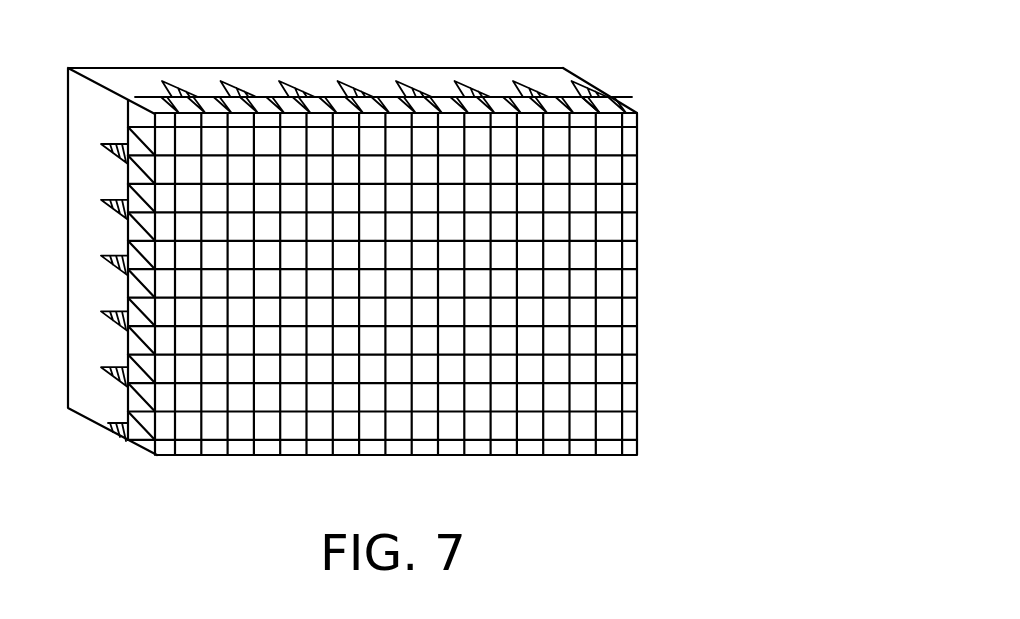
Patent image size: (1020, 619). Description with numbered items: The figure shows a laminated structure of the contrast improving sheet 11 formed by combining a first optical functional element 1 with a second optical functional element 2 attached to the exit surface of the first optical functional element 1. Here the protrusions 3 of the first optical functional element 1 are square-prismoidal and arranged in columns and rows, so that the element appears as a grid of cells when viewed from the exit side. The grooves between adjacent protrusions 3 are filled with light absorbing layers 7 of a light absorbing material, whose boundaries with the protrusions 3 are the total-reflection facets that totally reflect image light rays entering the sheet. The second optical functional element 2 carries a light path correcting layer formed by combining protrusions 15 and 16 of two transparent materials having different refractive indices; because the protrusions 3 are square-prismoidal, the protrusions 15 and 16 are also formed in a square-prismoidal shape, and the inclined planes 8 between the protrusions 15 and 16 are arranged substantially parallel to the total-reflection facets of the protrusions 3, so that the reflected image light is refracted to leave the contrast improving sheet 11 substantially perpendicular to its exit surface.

The first optical functional element 1 is at (579, 71).
The second optical functional element 2 is at (641, 94).
The protrusions 3 is at (502, 84).
The light absorbing layers 7 is at (423, 88).
The inclined planes 8 is at (599, 97).
The contrast improving sheet 11 is at (672, 221).
The protrusions 15 is at (595, 100).
The protrusions 16 is at (606, 98).